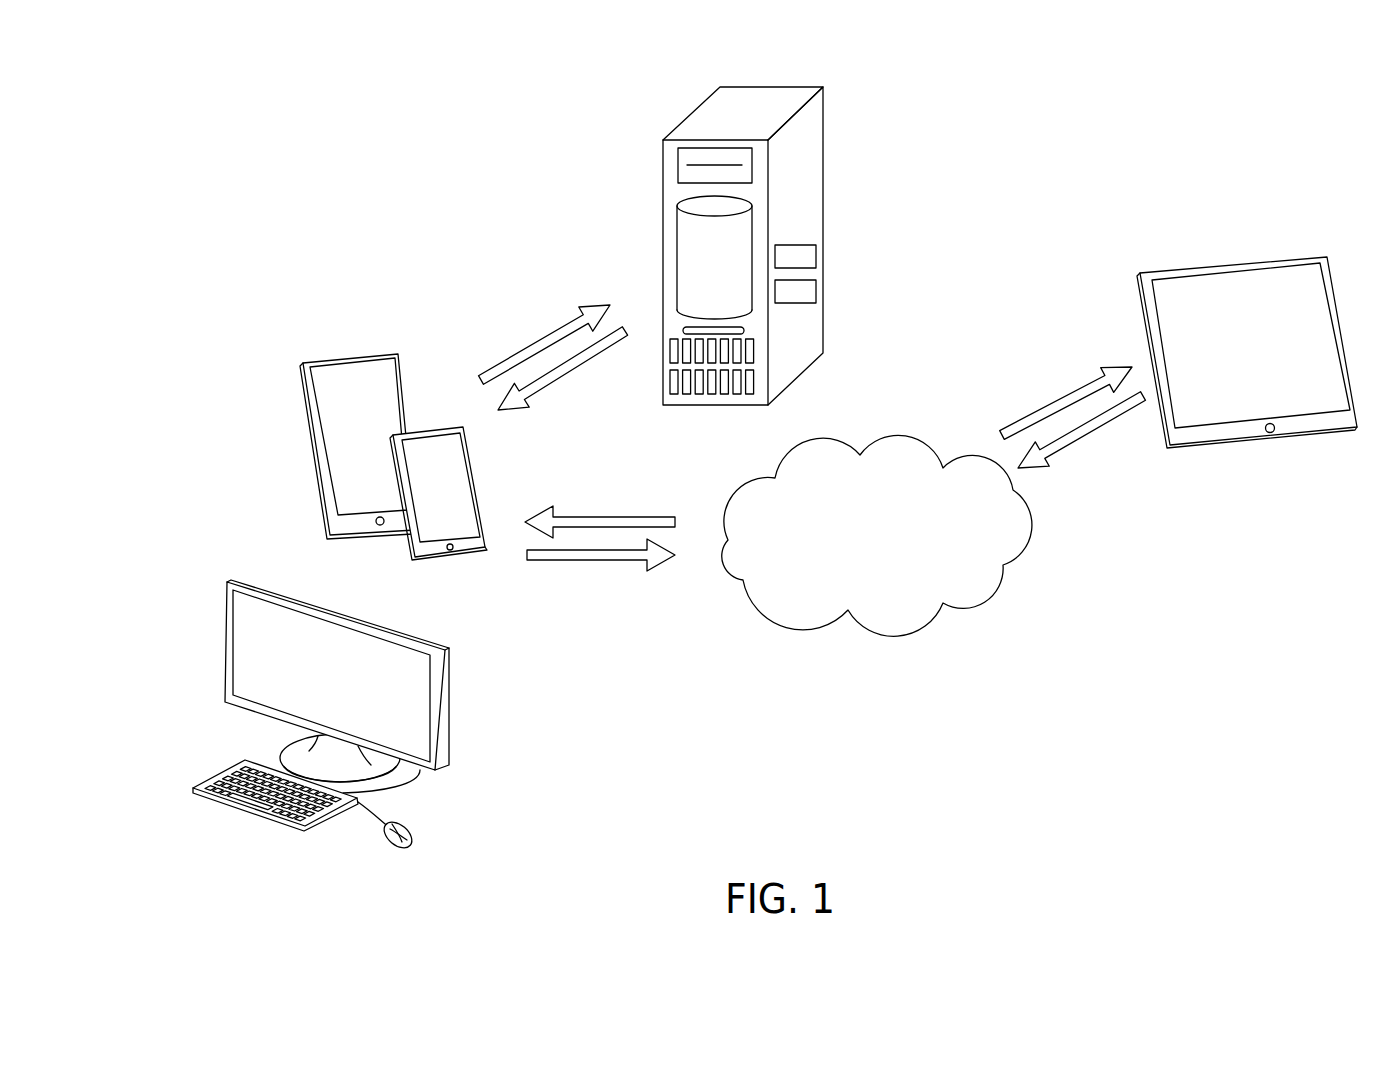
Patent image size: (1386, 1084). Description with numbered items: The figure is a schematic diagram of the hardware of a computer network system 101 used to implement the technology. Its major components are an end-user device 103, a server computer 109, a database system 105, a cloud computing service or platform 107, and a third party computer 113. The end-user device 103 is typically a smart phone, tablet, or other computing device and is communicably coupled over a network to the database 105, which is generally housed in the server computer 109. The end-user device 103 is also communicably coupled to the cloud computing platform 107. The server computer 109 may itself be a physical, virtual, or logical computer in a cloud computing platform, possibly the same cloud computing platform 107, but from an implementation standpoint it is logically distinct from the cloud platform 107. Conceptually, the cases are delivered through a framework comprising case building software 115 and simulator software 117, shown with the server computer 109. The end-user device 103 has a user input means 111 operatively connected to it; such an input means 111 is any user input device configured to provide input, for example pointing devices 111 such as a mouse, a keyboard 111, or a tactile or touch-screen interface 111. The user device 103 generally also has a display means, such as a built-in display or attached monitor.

The system / operating environment 101 is at (430, 243).
The end-user device 103 is at (397, 535).
The database 105 is at (700, 268).
The cloud computing platform 107 is at (1013, 590).
The server computer 109 is at (823, 338).
The user input means 111 is at (360, 372).
The third party computer 113 is at (1290, 275).
The case building software 115 is at (816, 255).
The simulator software 117 is at (816, 290).